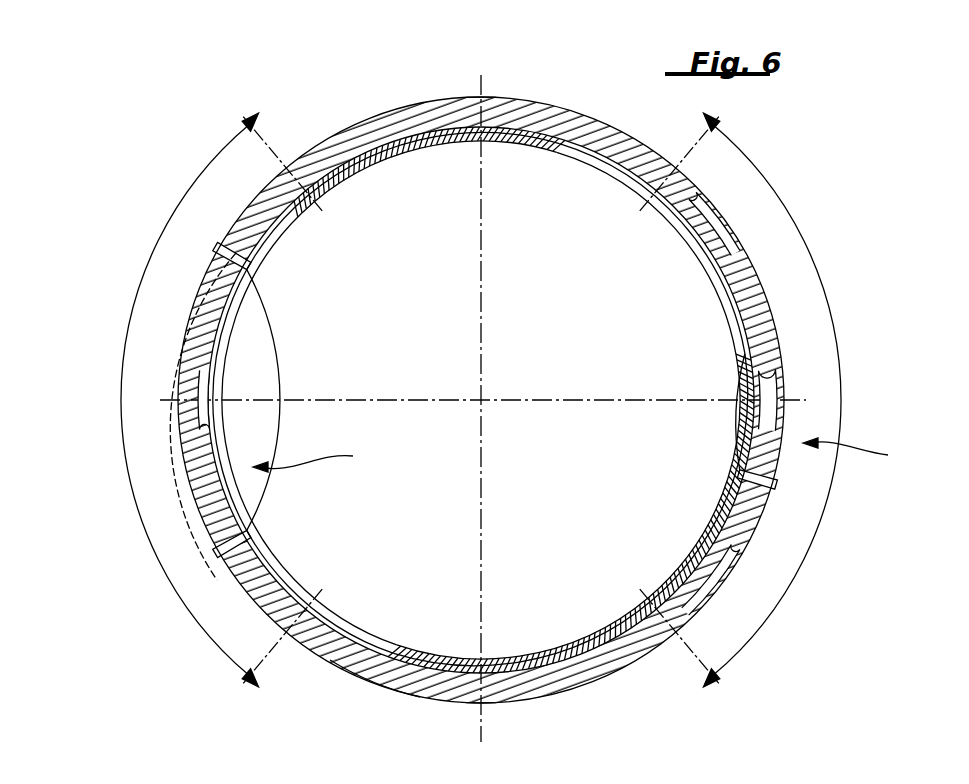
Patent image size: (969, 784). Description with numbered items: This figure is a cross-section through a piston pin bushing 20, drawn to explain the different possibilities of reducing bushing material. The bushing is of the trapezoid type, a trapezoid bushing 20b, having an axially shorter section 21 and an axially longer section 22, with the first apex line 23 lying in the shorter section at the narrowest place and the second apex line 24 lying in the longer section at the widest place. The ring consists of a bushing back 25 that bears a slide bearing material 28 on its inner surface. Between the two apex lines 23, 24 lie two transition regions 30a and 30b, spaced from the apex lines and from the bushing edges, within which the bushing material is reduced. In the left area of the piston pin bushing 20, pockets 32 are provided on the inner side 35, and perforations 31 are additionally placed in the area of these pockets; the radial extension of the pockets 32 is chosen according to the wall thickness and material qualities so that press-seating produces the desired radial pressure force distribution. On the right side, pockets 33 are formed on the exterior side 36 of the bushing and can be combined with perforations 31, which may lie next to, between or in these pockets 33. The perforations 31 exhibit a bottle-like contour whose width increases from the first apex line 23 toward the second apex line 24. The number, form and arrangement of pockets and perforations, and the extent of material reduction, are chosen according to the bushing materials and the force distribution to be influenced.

The piston pin bushing 20 is at (481, 400).
The trapezoid bushing 20b is at (329, 137).
The axially shorter section 21 is at (485, 107).
The axially longer section 22 is at (492, 699).
The first apex line 23 is at (483, 141).
The second apex line 24 is at (486, 660).
The bushing back 25 is at (373, 673).
The slide bearing material 28 is at (340, 620).
The first transition region 30a is at (120, 398).
The second transition region 30b is at (843, 393).
The perforations 31 is at (231, 546).
The pockets on the inner side 32 is at (230, 295).
The pockets on the exterior side 33 is at (702, 198).
The inner side 35 is at (318, 457).
The exterior side 36 is at (860, 453).